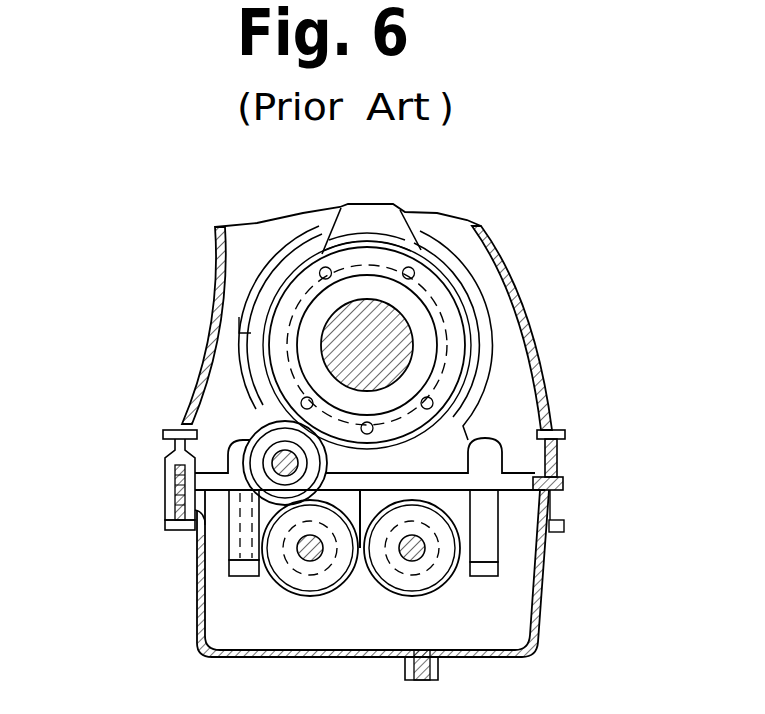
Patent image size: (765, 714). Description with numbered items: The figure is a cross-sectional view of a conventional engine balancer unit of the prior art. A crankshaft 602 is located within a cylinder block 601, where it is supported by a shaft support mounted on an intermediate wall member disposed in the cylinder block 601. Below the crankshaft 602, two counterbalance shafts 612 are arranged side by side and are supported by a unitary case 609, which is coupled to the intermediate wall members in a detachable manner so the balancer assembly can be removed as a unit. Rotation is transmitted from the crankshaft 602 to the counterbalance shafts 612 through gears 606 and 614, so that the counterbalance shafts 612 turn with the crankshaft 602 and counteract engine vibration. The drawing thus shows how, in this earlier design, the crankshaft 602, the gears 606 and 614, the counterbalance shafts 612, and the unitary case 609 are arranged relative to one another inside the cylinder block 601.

The cylinder block 601 is at (214, 304).
The crankshaft 602 is at (367, 345).
The gear 606 is at (264, 426).
The unitary case 609 is at (487, 515).
The counterbalance shaft 612 is at (290, 543).
The gear 614 is at (288, 597).